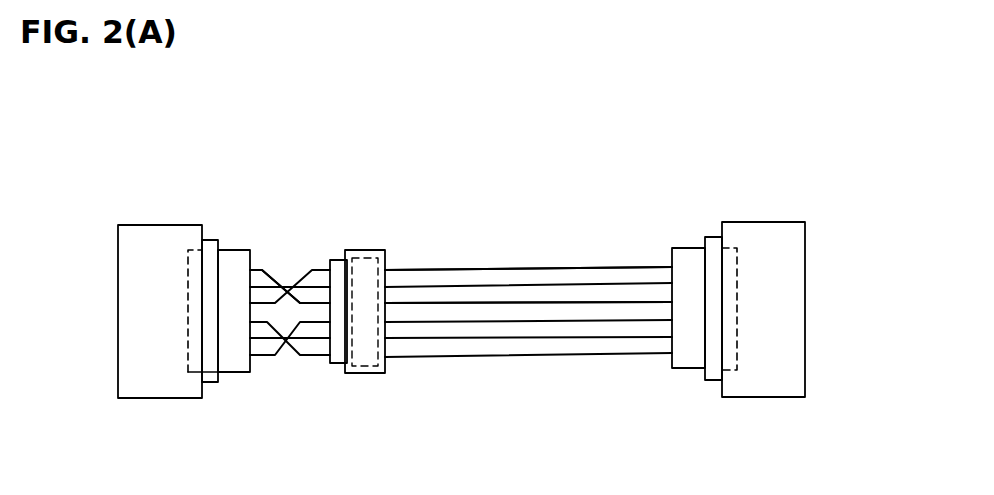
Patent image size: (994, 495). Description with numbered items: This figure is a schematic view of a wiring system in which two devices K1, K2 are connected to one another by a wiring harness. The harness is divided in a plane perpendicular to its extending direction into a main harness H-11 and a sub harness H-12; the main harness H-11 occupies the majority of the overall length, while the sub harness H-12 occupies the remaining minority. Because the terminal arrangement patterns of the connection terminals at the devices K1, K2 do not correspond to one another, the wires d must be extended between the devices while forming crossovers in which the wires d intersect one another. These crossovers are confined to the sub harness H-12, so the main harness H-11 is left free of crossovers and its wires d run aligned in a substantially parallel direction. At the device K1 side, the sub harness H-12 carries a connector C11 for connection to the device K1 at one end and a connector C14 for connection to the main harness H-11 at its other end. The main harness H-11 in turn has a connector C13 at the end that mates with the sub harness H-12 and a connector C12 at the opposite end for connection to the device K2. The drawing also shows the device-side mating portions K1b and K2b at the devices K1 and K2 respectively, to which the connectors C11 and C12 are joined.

The device K1 is at (145, 337).
The device-side connector of first device K1b is at (217, 240).
The connector C11 is at (234, 250).
The sub harness H-12 is at (340, 400).
The connector C14 is at (335, 260).
The connector C13 is at (375, 250).
The main harness H-11 is at (685, 400).
The wires d is at (293, 268).
The connector C12 is at (683, 248).
The device-side connector of second device K2b is at (705, 237).
The device K2 is at (788, 283).